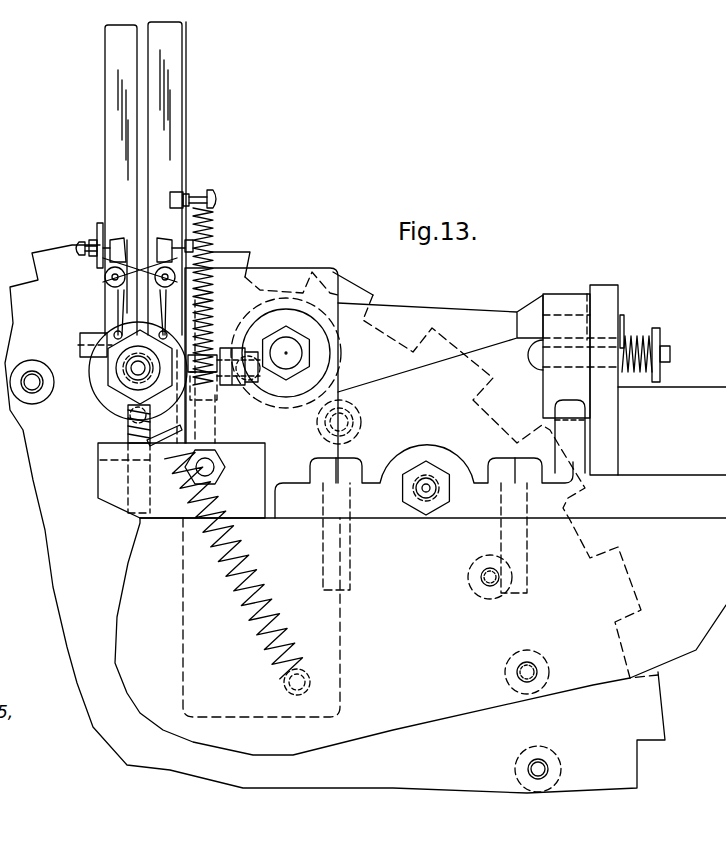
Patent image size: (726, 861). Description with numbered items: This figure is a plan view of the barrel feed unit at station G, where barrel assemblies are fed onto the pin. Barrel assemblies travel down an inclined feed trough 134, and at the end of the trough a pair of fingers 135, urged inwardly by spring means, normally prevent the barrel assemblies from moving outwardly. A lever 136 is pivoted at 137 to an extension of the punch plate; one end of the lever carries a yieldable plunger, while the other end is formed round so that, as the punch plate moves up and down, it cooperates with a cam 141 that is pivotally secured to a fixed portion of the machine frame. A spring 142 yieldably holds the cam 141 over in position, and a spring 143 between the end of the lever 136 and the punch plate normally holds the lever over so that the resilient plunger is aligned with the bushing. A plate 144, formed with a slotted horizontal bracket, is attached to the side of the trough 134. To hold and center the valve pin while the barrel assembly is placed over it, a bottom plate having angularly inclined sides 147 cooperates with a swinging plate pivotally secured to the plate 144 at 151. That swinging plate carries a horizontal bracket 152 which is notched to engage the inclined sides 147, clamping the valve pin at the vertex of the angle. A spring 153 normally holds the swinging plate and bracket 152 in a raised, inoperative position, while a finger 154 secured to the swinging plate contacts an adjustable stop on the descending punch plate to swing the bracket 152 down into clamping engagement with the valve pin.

The inclined feed trough 134 is at (188, 100).
The fingers 135 is at (160, 305).
The lever 136 is at (440, 305).
The pivot 137 is at (286, 370).
The cam 141 is at (551, 294).
The spring 142 is at (622, 328).
The spring 143 is at (220, 572).
The plate 144 is at (118, 412).
The angularly inclined sides 147 is at (106, 382).
The pivot 151 is at (240, 396).
The horizontal bracket 152 is at (80, 349).
The spring 153 is at (212, 230).
The finger 154 is at (216, 435).